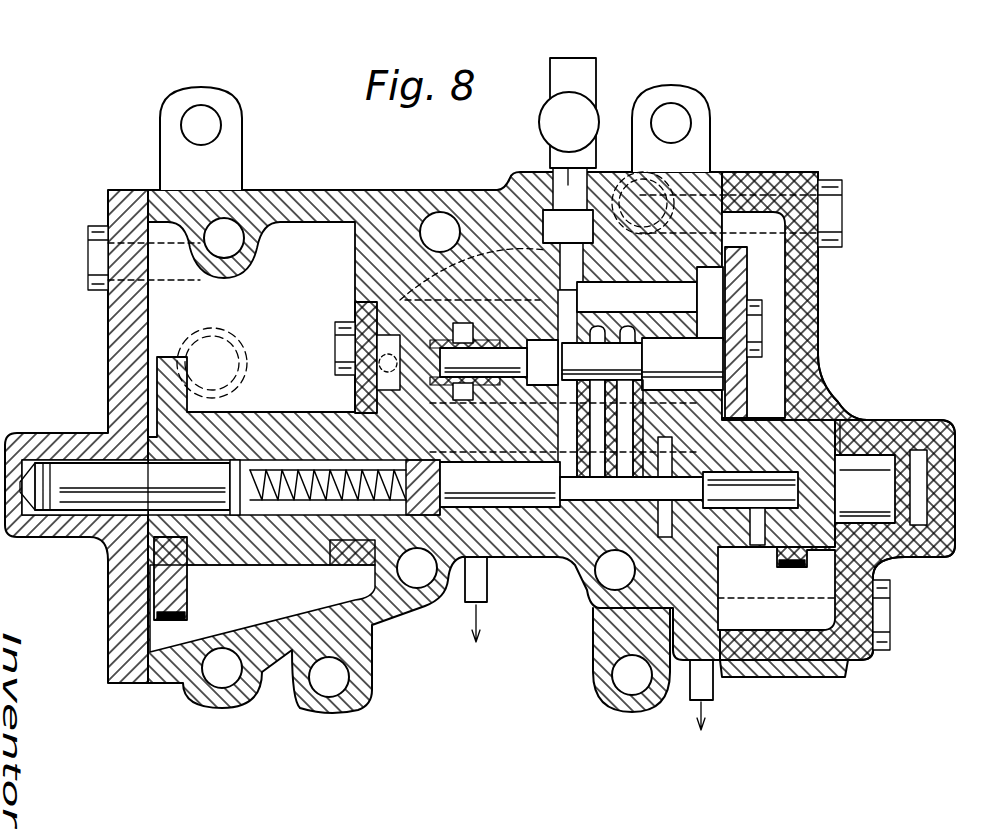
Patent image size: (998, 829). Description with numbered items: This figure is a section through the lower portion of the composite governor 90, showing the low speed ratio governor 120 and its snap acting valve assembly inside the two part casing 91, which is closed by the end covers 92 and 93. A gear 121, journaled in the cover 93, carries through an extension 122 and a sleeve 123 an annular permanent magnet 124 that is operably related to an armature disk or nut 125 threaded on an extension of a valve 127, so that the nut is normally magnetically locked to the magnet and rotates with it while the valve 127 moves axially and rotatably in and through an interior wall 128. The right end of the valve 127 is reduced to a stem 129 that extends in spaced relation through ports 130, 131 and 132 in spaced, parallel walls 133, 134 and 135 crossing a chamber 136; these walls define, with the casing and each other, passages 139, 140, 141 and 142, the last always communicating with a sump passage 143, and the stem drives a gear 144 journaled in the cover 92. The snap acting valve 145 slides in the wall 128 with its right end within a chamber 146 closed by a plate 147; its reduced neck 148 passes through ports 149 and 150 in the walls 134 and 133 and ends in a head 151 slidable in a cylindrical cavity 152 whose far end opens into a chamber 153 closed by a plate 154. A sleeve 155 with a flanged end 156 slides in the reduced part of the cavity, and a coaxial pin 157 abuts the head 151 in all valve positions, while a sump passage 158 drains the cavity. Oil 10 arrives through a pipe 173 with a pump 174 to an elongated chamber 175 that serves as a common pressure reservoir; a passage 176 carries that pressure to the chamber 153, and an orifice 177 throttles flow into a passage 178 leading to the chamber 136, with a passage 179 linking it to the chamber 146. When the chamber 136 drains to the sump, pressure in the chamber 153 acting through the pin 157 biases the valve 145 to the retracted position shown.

The oil 10 is at (560, 158).
The composite governor 90 is at (457, 176).
The casing 91 is at (368, 190).
The end cover 92 is at (772, 172).
The end cover 93 is at (108, 190).
The low speed ratio governor 120 is at (252, 576).
The gear 121 is at (178, 622).
The extension 122 is at (130, 487).
The sleeve 123 is at (205, 566).
The annular permanent magnet 124 is at (272, 552).
The armature disk or nut 125 is at (355, 528).
The valve 127 is at (500, 484).
The interior wall 128 is at (530, 414).
The stem 129 is at (631, 488).
The port 130 is at (578, 533).
The port 131 is at (605, 560).
The port 132 is at (634, 544).
The wall 133 is at (628, 428).
The wall 134 is at (662, 428).
The wall 135 is at (676, 458).
The chamber 136 is at (529, 528).
The passage 139 is at (530, 438).
The passage 140 is at (565, 424).
The passage 141 is at (565, 440).
The passage 142 is at (750, 495).
The sump passage 143 is at (718, 570).
The gear 144 is at (803, 578).
The snap acting valve 145 is at (682, 364).
The chamber 146 is at (740, 282).
The plate 147 is at (752, 305).
The reduced neck 148 is at (602, 361).
The port 149 is at (638, 324).
The port 150 is at (606, 328).
The head 151 is at (542, 362).
The cylindrical cavity 152 is at (522, 324).
The chamber 153 is at (360, 392).
The plate 154 is at (355, 306).
The sleeve 155 is at (478, 359).
The flanged end 156 is at (439, 355).
The pin 157 is at (483, 362).
The sump passage 158 is at (440, 412).
The pipe 173 is at (598, 68).
The pump 174 is at (600, 104).
The elongated chamber 175 is at (568, 226).
The passage 176 is at (472, 273).
The orifice 177 is at (600, 278).
The passage 178 is at (484, 298).
The passage 179 is at (668, 306).